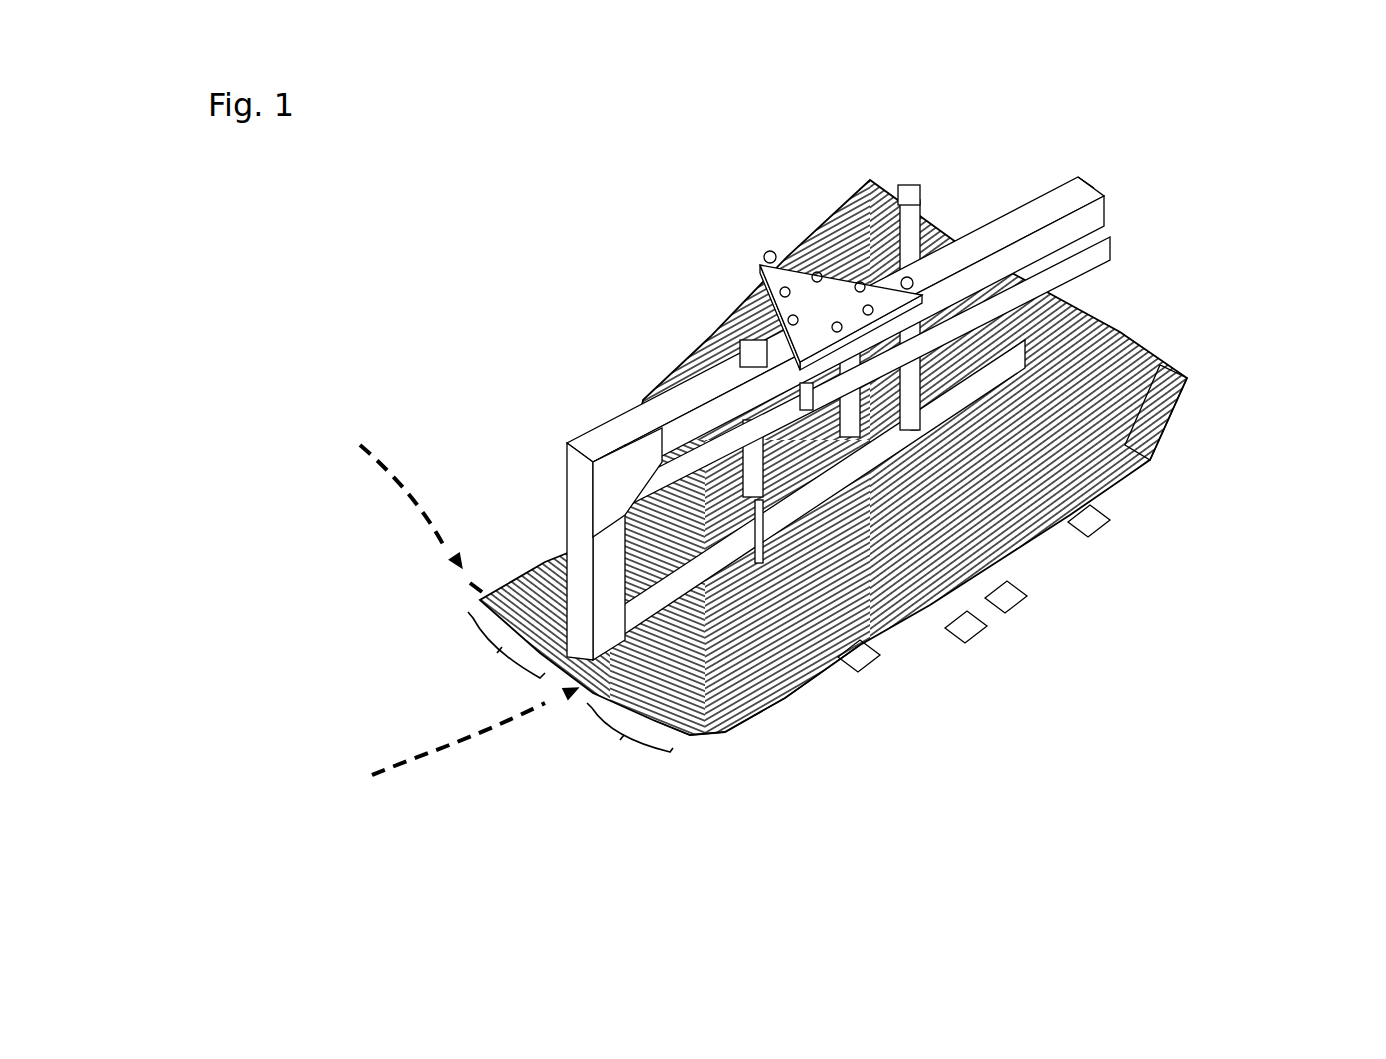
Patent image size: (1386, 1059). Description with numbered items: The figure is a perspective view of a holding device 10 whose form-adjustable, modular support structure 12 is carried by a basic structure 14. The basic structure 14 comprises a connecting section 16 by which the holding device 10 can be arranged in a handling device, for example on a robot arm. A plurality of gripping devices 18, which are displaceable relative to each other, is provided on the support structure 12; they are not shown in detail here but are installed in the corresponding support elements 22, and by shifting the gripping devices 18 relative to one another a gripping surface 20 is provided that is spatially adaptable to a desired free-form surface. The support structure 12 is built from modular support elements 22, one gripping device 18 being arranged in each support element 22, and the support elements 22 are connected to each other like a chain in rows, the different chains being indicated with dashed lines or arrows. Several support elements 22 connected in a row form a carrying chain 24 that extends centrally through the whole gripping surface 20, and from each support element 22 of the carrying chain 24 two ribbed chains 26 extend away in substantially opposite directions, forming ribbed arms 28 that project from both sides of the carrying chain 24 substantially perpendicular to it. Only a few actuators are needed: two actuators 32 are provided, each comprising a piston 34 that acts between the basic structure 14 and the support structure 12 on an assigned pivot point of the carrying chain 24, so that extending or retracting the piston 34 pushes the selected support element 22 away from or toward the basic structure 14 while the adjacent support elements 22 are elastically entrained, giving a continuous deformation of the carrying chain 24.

The holding device 10 is at (455, 353).
The modular support structure 12 is at (1142, 315).
The basic structure 14 is at (1057, 208).
The connecting section 16 is at (822, 295).
The gripping devices 18 is at (1068, 522).
The gripping surface 20 is at (747, 722).
The support elements 22 is at (1173, 390).
The carrying chain 24 is at (455, 742).
The ribbed chain 26 is at (406, 505).
The ribbed arms 28 is at (549, 696).
The actuators 32 is at (905, 182).
The piston 34 is at (913, 425).